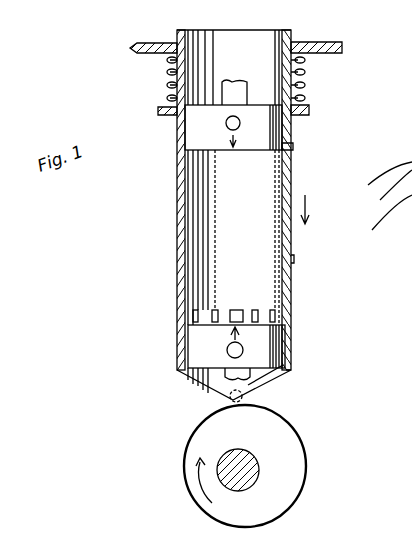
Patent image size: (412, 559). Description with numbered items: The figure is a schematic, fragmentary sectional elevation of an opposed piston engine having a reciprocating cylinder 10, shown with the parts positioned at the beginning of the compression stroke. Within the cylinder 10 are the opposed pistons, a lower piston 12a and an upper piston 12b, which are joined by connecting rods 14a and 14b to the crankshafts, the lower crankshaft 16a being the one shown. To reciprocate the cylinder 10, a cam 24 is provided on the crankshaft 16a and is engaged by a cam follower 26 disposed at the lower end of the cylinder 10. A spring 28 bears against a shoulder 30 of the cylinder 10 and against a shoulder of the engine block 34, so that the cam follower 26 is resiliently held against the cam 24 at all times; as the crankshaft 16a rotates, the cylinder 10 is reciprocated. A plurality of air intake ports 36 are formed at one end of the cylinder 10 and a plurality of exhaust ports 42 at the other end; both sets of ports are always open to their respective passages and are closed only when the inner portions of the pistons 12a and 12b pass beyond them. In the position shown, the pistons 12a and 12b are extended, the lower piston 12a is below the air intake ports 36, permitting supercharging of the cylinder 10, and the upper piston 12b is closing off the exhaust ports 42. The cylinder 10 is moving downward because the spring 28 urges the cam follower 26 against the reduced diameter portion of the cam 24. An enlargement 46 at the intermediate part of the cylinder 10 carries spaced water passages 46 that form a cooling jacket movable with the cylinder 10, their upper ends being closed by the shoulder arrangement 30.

The reciprocating cylinder 10 is at (290, 283).
The lower piston 12a is at (277, 345).
The upper piston 12b is at (258, 97).
The connecting rod 14a is at (253, 375).
The connecting rod 14b is at (233, 90).
The crankshaft 16a is at (259, 470).
The cam 24 is at (287, 430).
The cam follower 26 is at (227, 402).
The spring 28 is at (305, 76).
The shoulder 30 is at (309, 108).
The engine block 34 is at (340, 44).
The air intake ports 36 is at (290, 318).
The exhaust ports 42 is at (291, 143).
The enlargement with water passages 46 is at (294, 250).